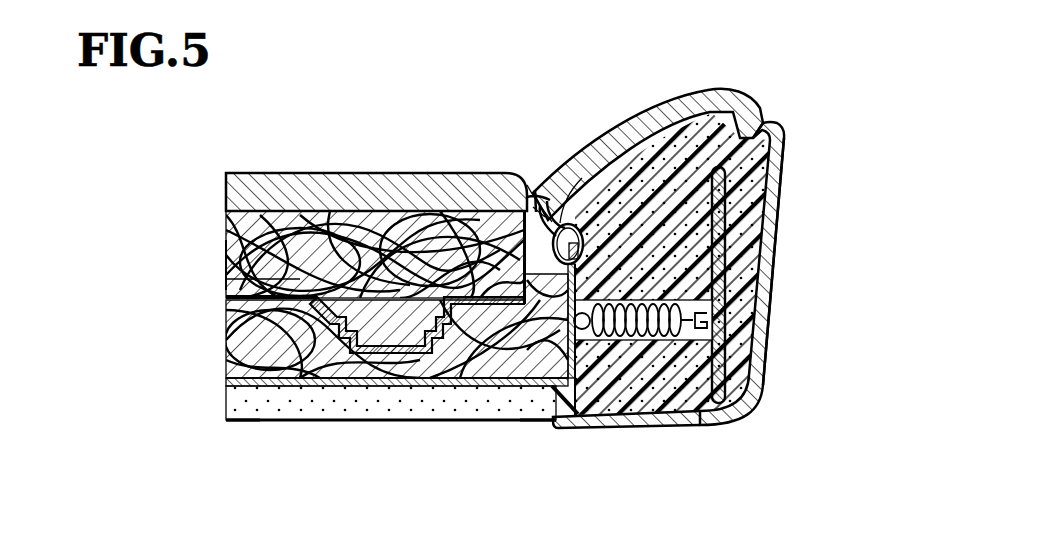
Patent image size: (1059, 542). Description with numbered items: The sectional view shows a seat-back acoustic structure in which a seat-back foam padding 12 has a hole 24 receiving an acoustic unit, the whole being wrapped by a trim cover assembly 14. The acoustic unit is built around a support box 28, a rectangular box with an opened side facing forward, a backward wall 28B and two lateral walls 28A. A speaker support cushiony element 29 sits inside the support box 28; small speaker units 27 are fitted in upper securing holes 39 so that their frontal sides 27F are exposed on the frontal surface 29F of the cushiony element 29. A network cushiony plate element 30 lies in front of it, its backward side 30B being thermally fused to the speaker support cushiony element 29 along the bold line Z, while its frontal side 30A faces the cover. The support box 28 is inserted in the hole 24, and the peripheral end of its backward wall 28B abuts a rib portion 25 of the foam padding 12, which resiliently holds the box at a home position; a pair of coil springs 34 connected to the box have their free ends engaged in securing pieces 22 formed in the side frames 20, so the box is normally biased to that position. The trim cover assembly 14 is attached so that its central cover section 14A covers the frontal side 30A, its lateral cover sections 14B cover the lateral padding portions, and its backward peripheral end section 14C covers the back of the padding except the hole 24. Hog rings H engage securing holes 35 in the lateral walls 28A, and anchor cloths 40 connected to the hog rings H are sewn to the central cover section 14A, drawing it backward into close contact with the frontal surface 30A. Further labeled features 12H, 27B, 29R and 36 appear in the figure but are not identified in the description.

The seat-back foam padding 12 is at (774, 192).
The opening of instrument panel 12H is at (768, 250).
The trim cover assembly 14 is at (542, 282).
The central cover section 14A is at (283, 175).
The lateral cover sections 14B is at (606, 128).
The backward peripheral end section 14C is at (580, 428).
The side frames 20 is at (748, 305).
The securing pieces 22 is at (740, 340).
The hole 24 is at (566, 213).
The rib portion 25 is at (430, 400).
The small speaker units 27 is at (417, 280).
The frontal sides of small speaker units 27F is at (398, 300).
The bottom of bracket 27B is at (365, 400).
The support box 28 is at (419, 449).
The lateral walls 28A is at (600, 422).
The backward wall 28B is at (233, 421).
The speaker support cushiony element 29 is at (338, 361).
The frontal surface of speaker support cushiony element 29F is at (230, 298).
The rear surface of lower foam 29R is at (230, 392).
The network cushiony plate element 30 is at (315, 204).
The frontal side of network cushiony element 30A is at (358, 212).
The backward side of network cushiony plate element 30B is at (230, 260).
The coil springs 34 is at (712, 424).
The securing holes 35 is at (514, 177).
The film 36 is at (230, 278).
The upper securing holes 39 is at (390, 400).
The anchor cloths 40 is at (590, 218).
The hog rings H is at (547, 198).
The bold line Z is at (243, 175).